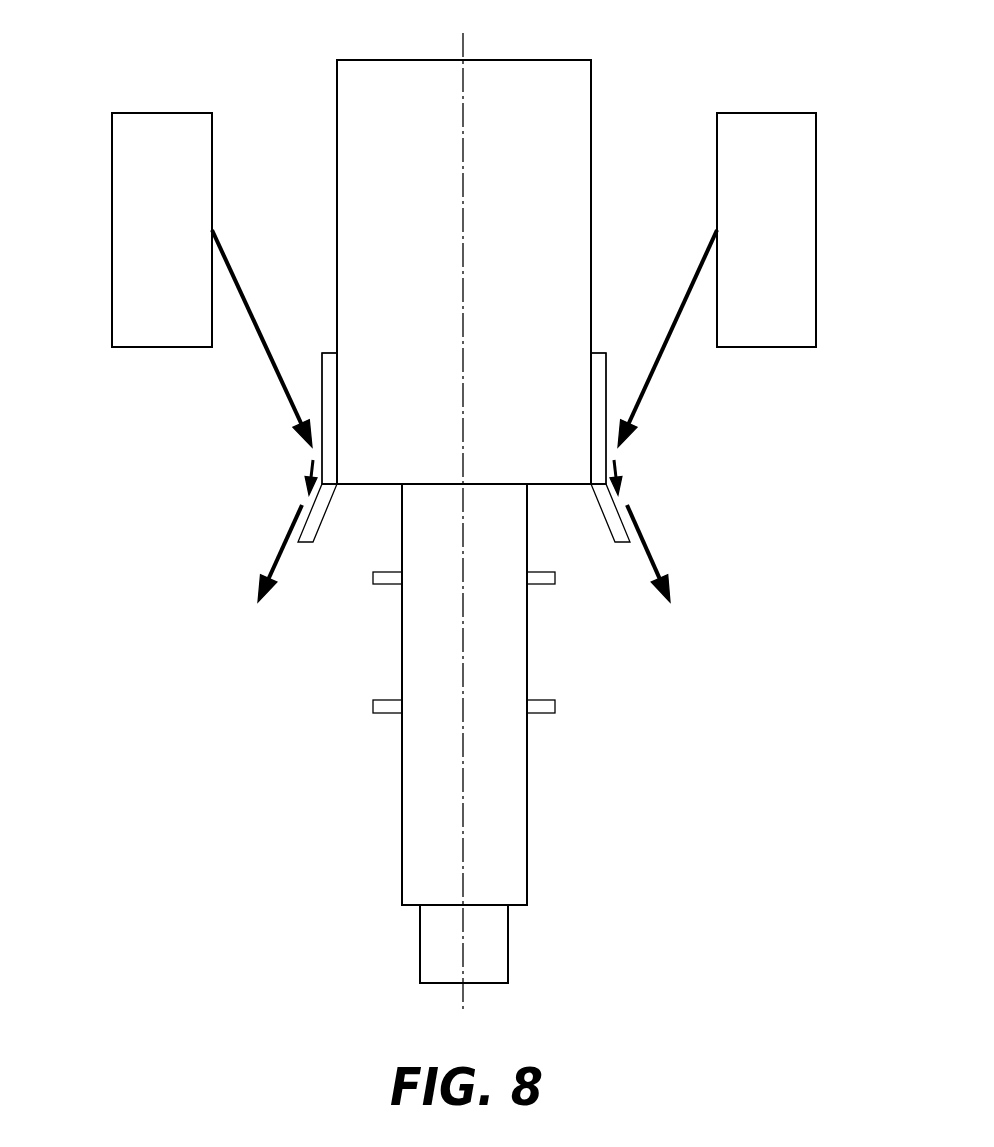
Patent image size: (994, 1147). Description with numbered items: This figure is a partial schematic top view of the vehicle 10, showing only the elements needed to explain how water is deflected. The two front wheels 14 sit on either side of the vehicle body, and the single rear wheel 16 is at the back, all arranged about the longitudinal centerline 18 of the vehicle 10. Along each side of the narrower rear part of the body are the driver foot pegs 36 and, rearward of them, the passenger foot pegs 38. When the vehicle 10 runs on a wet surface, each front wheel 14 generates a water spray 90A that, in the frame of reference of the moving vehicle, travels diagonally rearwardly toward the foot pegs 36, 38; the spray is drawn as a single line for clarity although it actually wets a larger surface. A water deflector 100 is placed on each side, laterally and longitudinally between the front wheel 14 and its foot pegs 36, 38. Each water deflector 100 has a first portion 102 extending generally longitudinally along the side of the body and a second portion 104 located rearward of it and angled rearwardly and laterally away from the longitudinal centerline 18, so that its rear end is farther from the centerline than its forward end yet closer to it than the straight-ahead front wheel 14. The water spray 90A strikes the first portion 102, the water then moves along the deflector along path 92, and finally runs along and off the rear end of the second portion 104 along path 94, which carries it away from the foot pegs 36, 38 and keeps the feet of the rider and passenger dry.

The vehicle 10 is at (743, 33).
The front wheel 14 is at (125, 292).
The rear wheel 16 is at (490, 935).
The longitudinal centerline 18 is at (463, 1003).
The driver foot peg 36 is at (373, 580).
The passenger foot peg 38 is at (373, 708).
The water spray 90A is at (292, 410).
The path 92 is at (308, 472).
The path 94 is at (285, 543).
The water deflector 100 is at (330, 353).
The first portion 102 is at (330, 417).
The second portion 104 is at (367, 500).